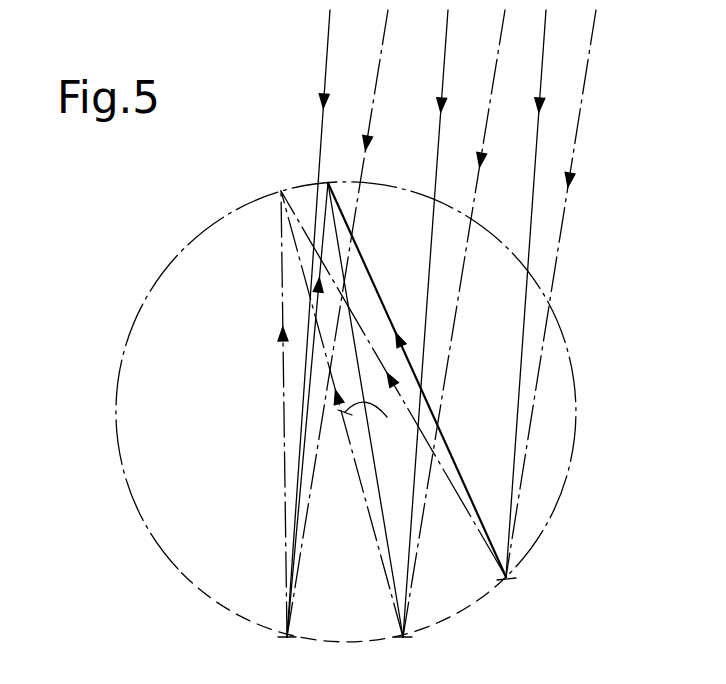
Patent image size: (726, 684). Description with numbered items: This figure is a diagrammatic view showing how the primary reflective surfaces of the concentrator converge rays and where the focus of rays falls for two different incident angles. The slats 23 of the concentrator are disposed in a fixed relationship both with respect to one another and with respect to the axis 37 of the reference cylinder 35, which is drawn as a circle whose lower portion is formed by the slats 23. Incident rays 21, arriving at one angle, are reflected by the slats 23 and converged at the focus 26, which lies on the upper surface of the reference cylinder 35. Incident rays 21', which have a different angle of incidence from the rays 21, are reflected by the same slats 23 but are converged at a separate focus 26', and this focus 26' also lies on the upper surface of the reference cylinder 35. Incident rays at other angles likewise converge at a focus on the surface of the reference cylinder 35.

The incident rays 21 is at (416, 323).
The incident rays 21' is at (441, 323).
The slats 23 is at (455, 611).
The focus 26 is at (396, 385).
The focus 26' is at (369, 397).
The reference cylinder 35 is at (172, 258).
The axis 37 is at (369, 423).